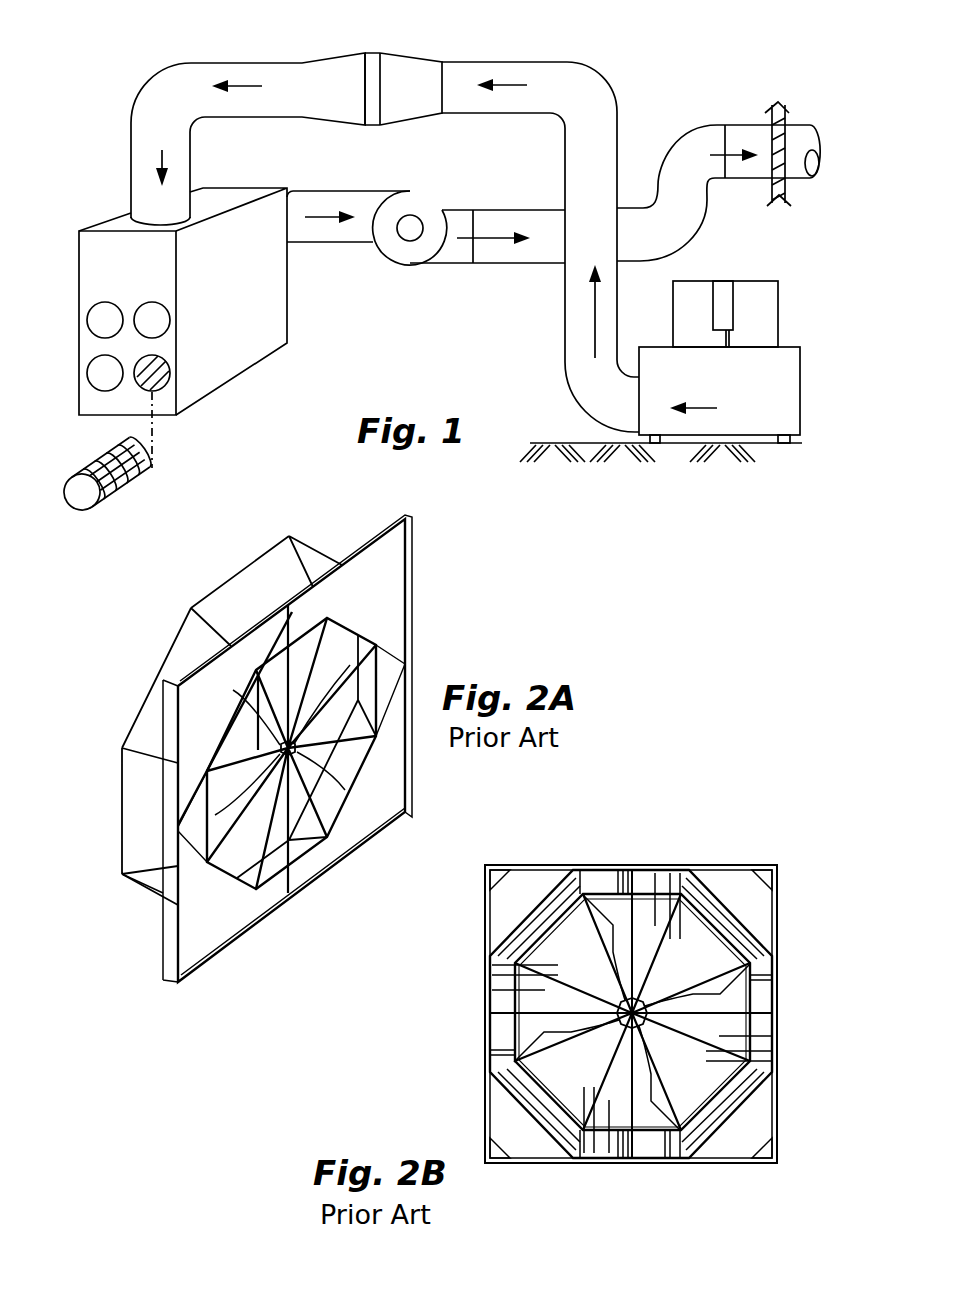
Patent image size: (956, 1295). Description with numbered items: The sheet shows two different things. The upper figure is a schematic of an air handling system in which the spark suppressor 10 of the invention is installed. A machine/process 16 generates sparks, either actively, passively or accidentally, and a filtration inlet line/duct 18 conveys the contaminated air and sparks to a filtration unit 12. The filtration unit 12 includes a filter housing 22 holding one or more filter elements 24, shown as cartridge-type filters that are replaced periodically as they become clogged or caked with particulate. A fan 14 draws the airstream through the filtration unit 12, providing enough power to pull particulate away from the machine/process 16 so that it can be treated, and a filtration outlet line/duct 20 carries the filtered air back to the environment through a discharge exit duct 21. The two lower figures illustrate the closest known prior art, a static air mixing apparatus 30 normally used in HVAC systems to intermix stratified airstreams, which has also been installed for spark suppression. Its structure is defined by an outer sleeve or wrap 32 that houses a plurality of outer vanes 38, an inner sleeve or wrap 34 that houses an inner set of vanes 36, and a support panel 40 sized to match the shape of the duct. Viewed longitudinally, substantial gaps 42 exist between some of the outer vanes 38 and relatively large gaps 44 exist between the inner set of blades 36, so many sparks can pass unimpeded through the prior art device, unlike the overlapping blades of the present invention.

In FIG. 1, the spark suppressor 10 is at (417, 44).
In FIG. 1, the filtration unit 12 is at (194, 305).
In FIG. 1, the fan 14 is at (430, 271).
In FIG. 1, the machine/process 16 is at (792, 313).
In FIG. 1, the filtration inlet line/duct 18 is at (238, 117).
In FIG. 1, the filtration outlet line/duct 20 is at (329, 190).
In FIG. 1, the discharge exit duct 21 is at (807, 124).
In FIG. 1, the filter housing 22 is at (230, 324).
In FIG. 1, the filter elements 24 is at (153, 313).
In FIG. 2A, the air mixing apparatus 30 is at (312, 889).
In FIG. 2B, the air mixing apparatus 30 is at (612, 864).
In FIG. 2A, the outer sleeve or wrap 32 is at (320, 567).
In FIG. 2B, the outer sleeve or wrap 32 is at (718, 890).
In FIG. 2A, the inner sleeve or wrap 34 is at (262, 653).
In FIG. 2B, the inner sleeve or wrap 34 is at (760, 936).
In FIG. 2A, the inner set of vanes 36 is at (263, 697).
In FIG. 2B, the inner set of vanes 36 is at (557, 1068).
In FIG. 2A, the outer vanes 38 is at (408, 667).
In FIG. 2B, the outer vanes 38 is at (592, 877).
In FIG. 2A, the support panel 40 is at (383, 527).
In FIG. 2B, the support panel 40 is at (514, 862).
In FIG. 2B, the gaps 42 is at (688, 920).
In FIG. 2B, the gaps 44 is at (705, 884).